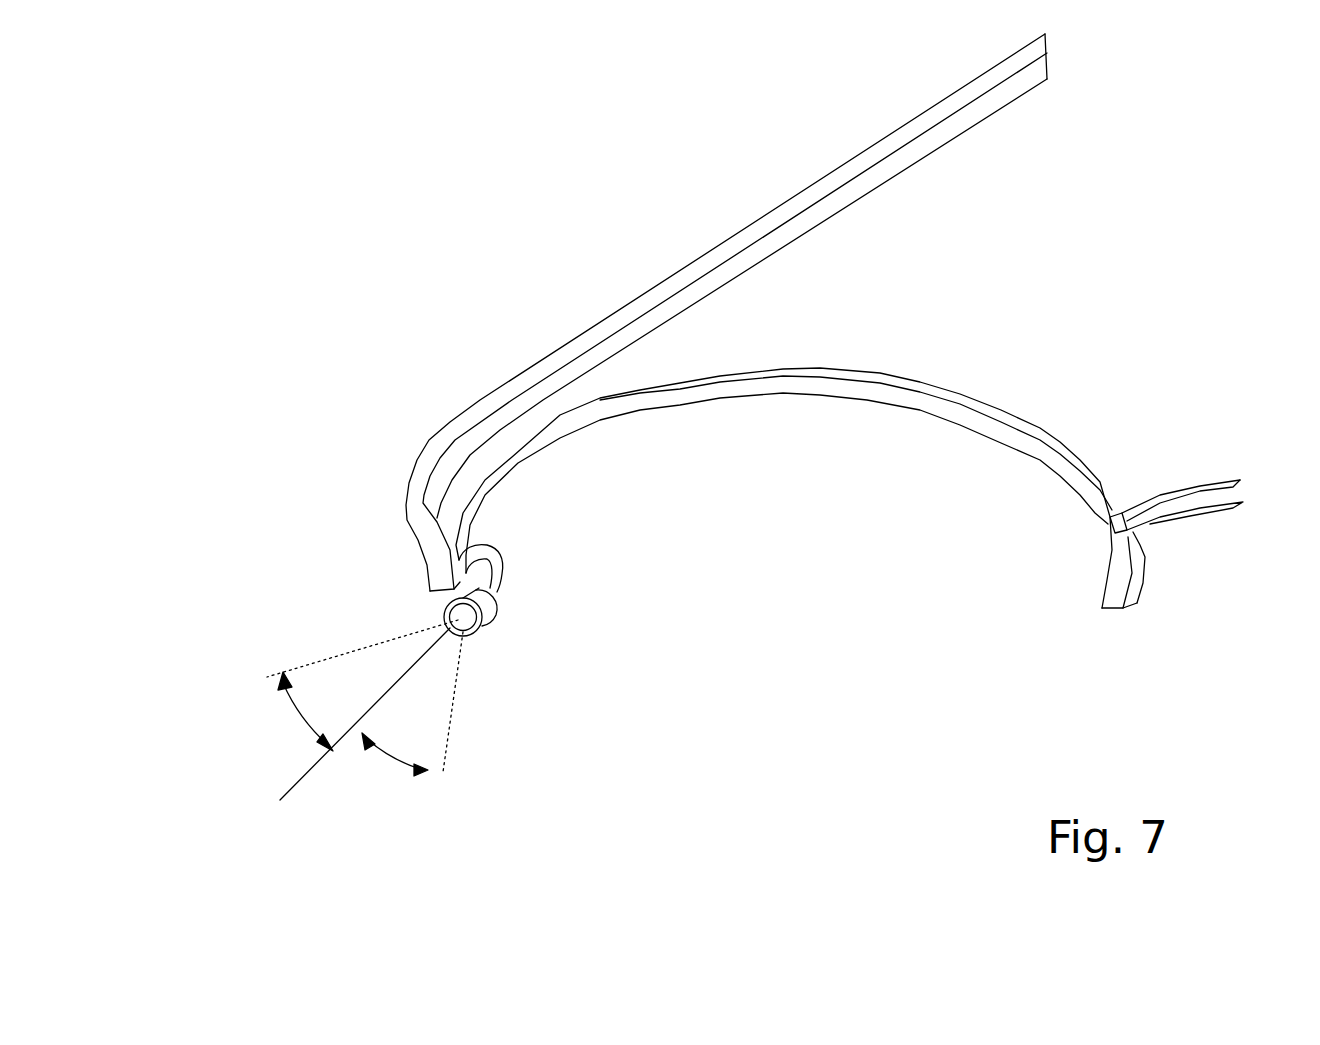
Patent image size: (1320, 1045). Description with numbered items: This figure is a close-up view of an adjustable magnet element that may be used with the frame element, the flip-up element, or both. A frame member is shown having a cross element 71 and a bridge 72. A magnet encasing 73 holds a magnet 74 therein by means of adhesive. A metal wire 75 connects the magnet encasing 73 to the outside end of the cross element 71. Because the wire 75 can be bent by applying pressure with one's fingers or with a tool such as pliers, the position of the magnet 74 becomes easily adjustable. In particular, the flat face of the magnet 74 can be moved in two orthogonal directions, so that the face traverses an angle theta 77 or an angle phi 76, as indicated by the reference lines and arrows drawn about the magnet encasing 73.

The cross element 71 is at (827, 387).
The bridge 72 is at (1185, 497).
The magnet encasing 73 is at (498, 609).
The magnet 74 is at (482, 632).
The metal wire 75 is at (500, 548).
The angle phi 76 is at (297, 727).
The angle theta 77 is at (390, 772).